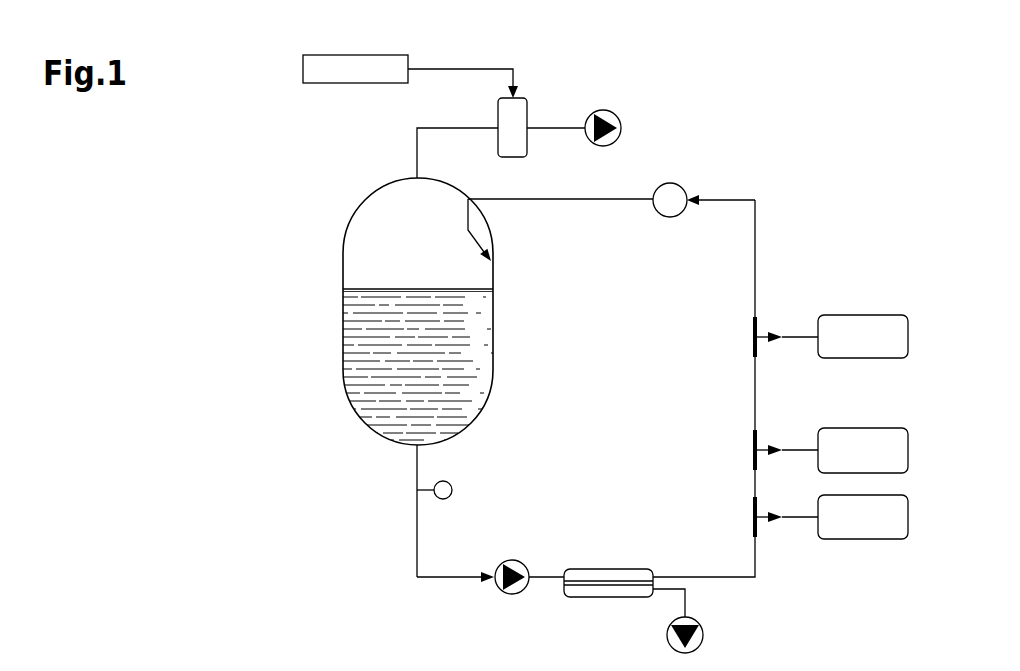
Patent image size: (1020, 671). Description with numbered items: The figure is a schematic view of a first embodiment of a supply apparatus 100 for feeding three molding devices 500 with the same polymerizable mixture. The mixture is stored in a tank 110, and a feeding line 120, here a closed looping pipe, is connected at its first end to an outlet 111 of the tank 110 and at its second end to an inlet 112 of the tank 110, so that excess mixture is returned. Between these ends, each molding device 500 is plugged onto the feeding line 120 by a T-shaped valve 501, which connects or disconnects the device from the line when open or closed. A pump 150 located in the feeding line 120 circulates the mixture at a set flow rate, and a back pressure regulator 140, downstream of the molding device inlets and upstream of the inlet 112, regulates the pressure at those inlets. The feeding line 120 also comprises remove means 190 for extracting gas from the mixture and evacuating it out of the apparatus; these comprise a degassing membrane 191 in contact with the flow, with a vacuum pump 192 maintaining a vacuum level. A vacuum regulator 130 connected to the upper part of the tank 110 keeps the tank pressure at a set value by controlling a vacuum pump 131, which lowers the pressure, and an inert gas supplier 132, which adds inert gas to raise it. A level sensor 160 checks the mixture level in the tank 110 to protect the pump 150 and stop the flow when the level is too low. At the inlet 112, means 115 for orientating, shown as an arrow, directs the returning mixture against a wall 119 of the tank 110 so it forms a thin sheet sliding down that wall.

The supply apparatus 100 is at (801, 110).
The tank 110 is at (493, 328).
The outlet 111 is at (415, 447).
The inlet 112 is at (468, 199).
The means for orientating 115 is at (478, 250).
The wall 119 is at (492, 268).
The feeding line 120 is at (725, 576).
The vacuum regulator 130 is at (528, 110).
The vacuum pump 131 is at (612, 112).
The inert gas supplier 132 is at (379, 55).
The back pressure regulator 140 is at (676, 184).
The pump 150 is at (521, 560).
The level sensor 160 is at (451, 485).
The remove means 190 is at (600, 568).
The degassing membrane 191 is at (613, 585).
The vacuum pump 192 is at (703, 625).
The molding device 500 is at (862, 315).
The valve 501 is at (759, 335).